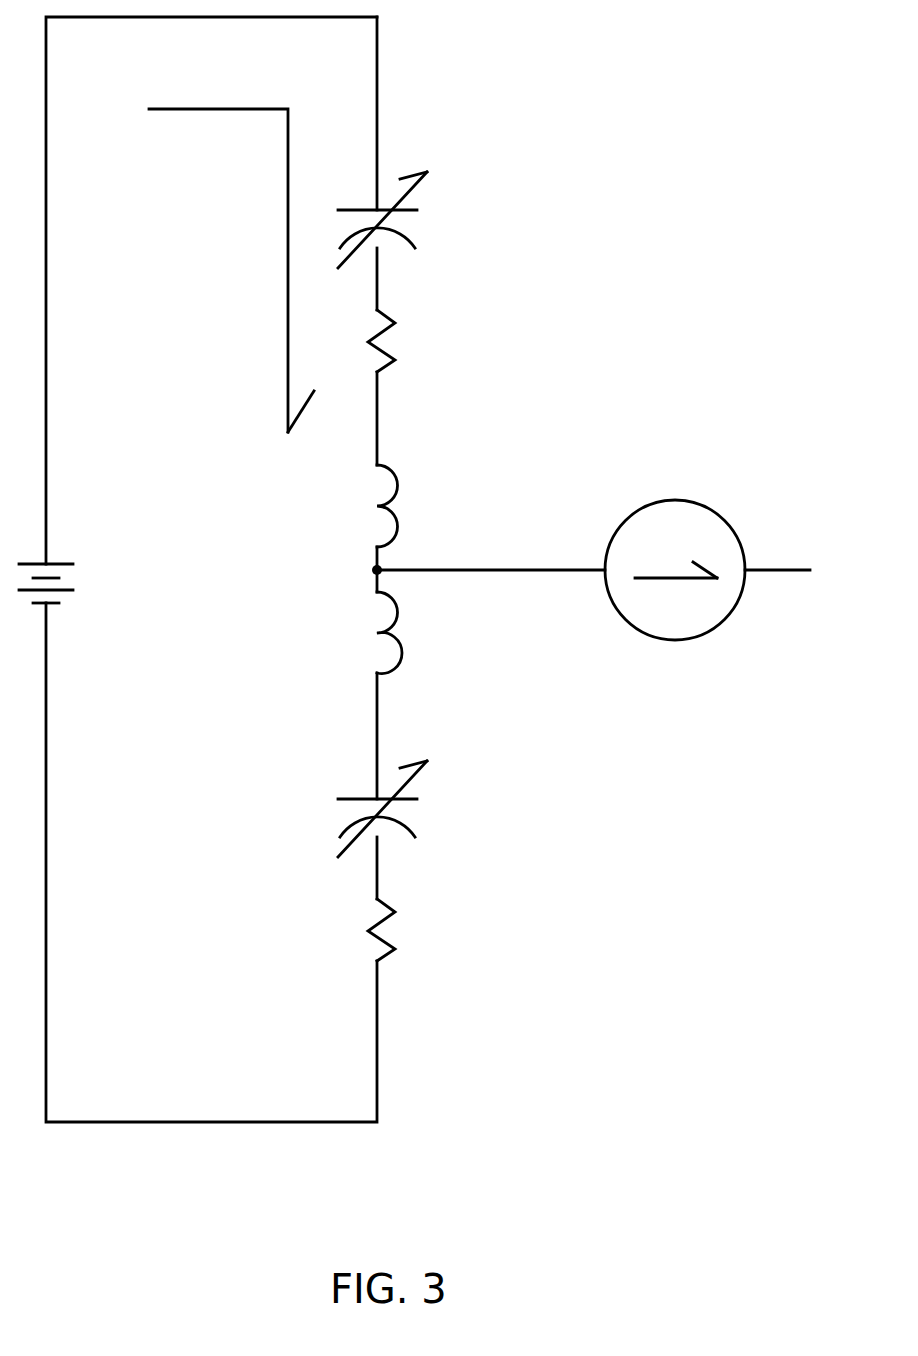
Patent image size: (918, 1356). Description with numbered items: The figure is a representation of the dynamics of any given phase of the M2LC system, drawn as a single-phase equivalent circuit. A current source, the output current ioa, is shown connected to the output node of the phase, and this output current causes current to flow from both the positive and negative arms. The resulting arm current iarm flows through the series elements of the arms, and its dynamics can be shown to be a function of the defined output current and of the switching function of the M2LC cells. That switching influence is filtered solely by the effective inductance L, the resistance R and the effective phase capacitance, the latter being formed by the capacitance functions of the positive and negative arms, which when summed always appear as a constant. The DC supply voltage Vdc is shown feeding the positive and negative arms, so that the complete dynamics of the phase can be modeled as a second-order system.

The DC voltage source Vdc is at (74, 582).
The arm current iarm is at (231, 254).
The resistance R is at (394, 635).
The effective inductance L is at (397, 569).
The output current ioa is at (675, 556).